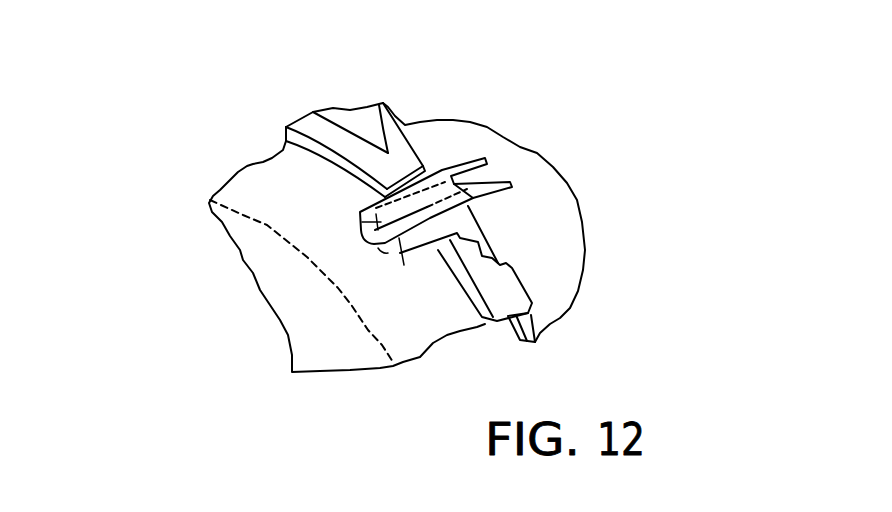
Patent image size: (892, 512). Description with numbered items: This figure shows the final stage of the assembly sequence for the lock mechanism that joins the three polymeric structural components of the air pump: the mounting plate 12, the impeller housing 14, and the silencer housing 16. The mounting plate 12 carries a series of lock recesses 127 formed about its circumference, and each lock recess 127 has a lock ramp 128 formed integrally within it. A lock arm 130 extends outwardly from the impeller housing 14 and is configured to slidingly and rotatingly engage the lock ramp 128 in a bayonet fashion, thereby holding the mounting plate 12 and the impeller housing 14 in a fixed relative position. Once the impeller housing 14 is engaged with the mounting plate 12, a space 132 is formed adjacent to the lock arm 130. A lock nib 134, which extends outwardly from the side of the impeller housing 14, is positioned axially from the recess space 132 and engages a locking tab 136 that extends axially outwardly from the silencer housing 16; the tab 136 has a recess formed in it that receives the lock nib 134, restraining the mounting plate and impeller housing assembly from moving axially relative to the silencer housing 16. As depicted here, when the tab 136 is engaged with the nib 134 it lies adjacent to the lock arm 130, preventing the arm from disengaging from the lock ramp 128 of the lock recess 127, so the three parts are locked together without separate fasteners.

The mounting plate 12 is at (292, 110).
The impeller housing 14 is at (231, 193).
The silencer housing 16 is at (554, 161).
The lock recess 127 is at (417, 181).
The lock ramp 128 is at (473, 262).
The lock arm 130 is at (492, 258).
The space 132 is at (400, 253).
The lock nib 134 is at (360, 218).
The locking tab 136 is at (455, 185).